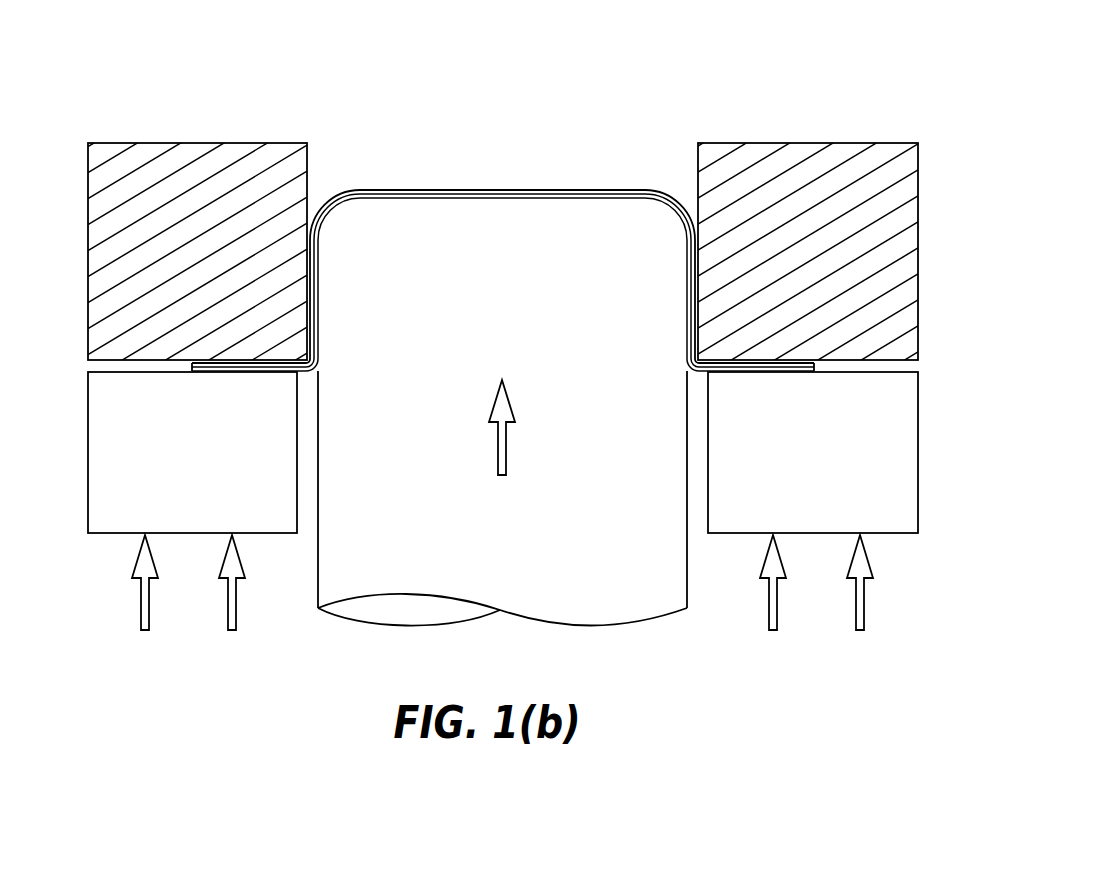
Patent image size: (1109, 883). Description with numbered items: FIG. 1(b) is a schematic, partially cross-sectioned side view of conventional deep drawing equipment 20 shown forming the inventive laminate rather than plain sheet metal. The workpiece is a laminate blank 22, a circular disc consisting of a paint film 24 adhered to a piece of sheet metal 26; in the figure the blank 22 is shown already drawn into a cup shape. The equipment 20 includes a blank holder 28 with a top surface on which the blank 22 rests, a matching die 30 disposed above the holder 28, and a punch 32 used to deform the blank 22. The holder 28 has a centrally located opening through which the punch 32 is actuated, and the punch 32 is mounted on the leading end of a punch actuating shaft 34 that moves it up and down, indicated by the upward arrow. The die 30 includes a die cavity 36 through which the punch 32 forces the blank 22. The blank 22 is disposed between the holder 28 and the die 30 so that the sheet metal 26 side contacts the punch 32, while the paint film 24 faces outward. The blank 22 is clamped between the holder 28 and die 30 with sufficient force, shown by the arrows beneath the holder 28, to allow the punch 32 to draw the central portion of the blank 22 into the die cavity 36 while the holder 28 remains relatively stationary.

The equipment 20 is at (762, 62).
The laminate blank 22 is at (503, 249).
The paint film 24 is at (387, 189).
The sheet metal 26 is at (437, 197).
The blank holder 28 is at (97, 453).
The die 30 is at (97, 301).
The punch 32 is at (508, 225).
The punch actuating shaft 34 is at (553, 593).
The die cavity 36 is at (325, 170).